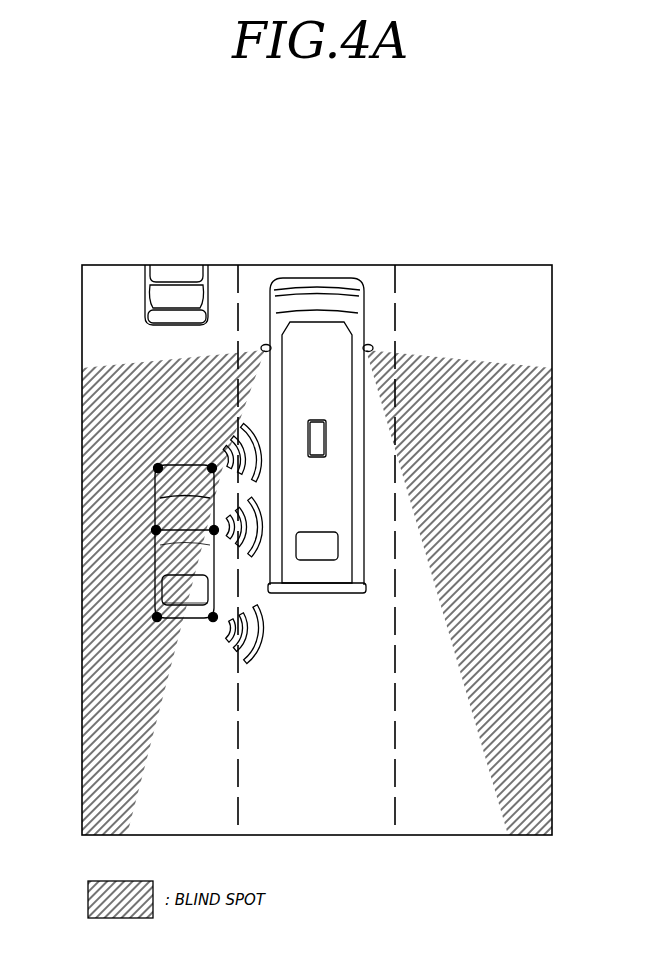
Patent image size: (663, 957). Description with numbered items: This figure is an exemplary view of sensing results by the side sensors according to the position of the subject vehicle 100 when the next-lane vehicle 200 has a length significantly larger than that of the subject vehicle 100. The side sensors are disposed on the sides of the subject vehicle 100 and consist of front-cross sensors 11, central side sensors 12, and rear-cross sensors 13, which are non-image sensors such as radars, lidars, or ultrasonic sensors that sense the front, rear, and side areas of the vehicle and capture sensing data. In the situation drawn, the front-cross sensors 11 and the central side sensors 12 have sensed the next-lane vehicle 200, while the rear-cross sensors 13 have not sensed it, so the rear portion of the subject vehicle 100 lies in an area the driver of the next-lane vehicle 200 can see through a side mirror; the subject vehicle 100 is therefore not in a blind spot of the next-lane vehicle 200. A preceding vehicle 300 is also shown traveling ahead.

The front-cross sensors 11 is at (207, 465).
The central side sensors 12 is at (156, 546).
The rear-cross sensors 13 is at (212, 622).
The subject vehicle 100 is at (153, 578).
The next-lane vehicle 200 is at (318, 279).
The preceding vehicle 300 is at (145, 281).